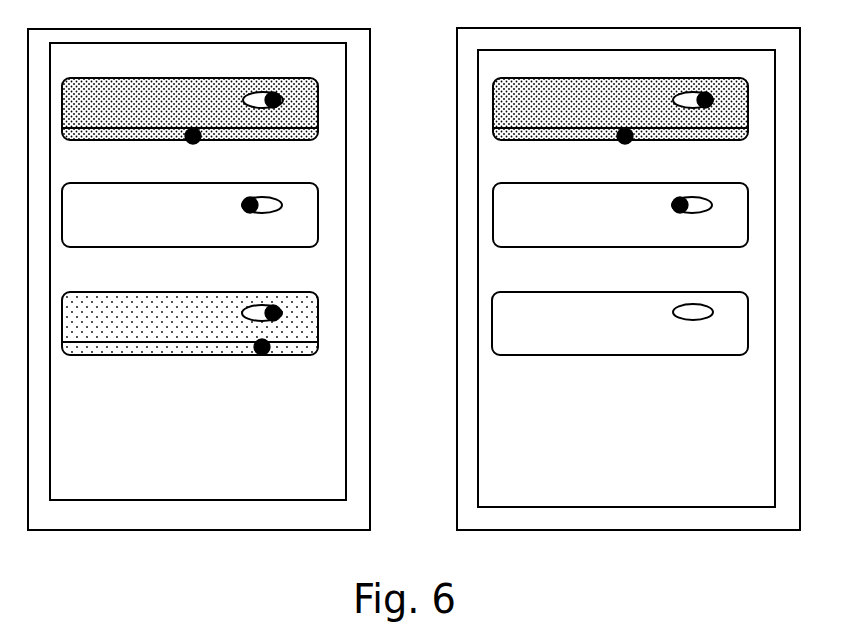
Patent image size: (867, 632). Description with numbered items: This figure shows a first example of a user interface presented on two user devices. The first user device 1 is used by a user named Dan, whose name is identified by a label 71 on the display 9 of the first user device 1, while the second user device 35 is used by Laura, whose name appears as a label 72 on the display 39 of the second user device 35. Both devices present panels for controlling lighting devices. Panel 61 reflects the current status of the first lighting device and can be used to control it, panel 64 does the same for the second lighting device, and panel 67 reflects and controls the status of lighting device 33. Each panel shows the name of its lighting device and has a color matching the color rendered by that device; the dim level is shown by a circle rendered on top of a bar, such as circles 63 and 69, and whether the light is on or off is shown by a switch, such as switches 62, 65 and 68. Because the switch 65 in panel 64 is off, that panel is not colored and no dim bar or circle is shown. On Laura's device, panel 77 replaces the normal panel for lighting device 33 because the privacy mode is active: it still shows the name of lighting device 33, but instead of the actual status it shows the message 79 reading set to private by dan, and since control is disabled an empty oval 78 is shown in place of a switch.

The first user device 1 is at (370, 460).
The display 9 is at (346, 498).
The second user device 35 is at (800, 463).
The display 39 is at (775, 498).
The panel 61 is at (318, 108).
The switch 62 is at (264, 97).
The circle 63 is at (197, 142).
The panel 64 is at (318, 210).
The switch 65 is at (248, 200).
The panel 67 is at (318, 322).
The switch 68 is at (268, 307).
The circle 69 is at (268, 356).
The lighting device 33 is at (123, 304).
The label 71 is at (97, 470).
The label 72 is at (535, 473).
The panel 77 is at (748, 322).
The empty oval 78 is at (696, 307).
The message 79 is at (612, 348).